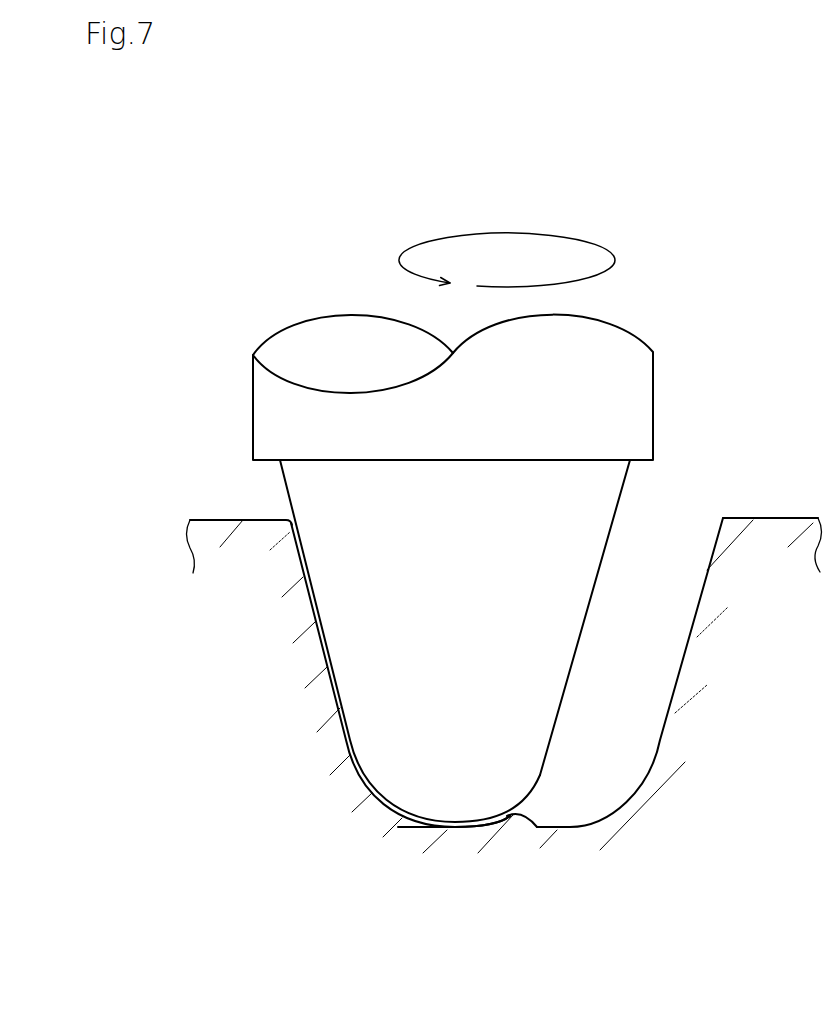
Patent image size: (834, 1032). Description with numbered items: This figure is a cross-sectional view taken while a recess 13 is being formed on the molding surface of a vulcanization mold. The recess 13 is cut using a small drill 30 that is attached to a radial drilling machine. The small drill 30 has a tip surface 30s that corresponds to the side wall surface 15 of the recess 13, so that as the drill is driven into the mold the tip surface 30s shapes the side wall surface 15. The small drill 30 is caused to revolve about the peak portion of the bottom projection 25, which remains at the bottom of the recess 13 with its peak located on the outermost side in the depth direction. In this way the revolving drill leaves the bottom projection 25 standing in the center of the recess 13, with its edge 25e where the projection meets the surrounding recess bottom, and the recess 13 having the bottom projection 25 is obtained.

The recess 13 is at (647, 548).
The side wall surface 15 is at (700, 614).
The bottom projection 25 is at (517, 807).
The edge of hole bottom surface 25e is at (535, 829).
The small drill 30 is at (500, 568).
The tip surface 30s is at (572, 692).